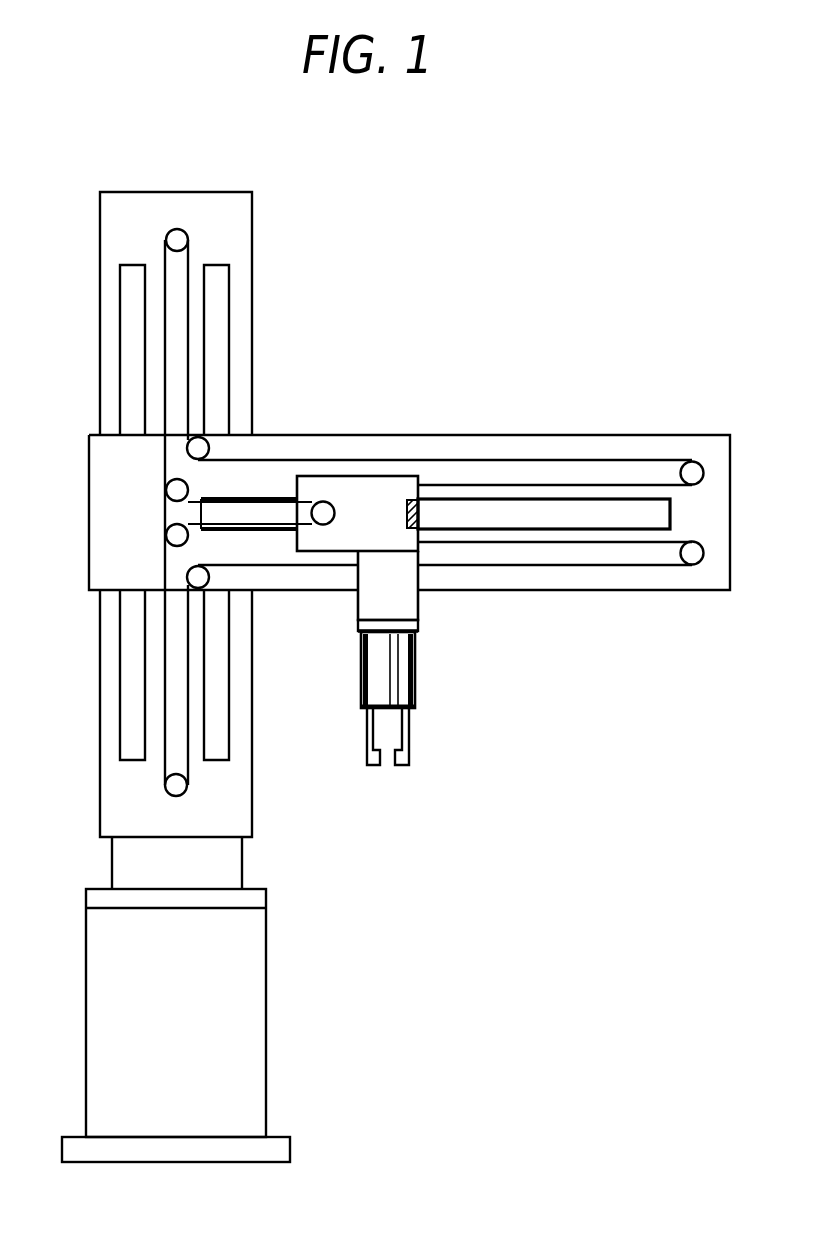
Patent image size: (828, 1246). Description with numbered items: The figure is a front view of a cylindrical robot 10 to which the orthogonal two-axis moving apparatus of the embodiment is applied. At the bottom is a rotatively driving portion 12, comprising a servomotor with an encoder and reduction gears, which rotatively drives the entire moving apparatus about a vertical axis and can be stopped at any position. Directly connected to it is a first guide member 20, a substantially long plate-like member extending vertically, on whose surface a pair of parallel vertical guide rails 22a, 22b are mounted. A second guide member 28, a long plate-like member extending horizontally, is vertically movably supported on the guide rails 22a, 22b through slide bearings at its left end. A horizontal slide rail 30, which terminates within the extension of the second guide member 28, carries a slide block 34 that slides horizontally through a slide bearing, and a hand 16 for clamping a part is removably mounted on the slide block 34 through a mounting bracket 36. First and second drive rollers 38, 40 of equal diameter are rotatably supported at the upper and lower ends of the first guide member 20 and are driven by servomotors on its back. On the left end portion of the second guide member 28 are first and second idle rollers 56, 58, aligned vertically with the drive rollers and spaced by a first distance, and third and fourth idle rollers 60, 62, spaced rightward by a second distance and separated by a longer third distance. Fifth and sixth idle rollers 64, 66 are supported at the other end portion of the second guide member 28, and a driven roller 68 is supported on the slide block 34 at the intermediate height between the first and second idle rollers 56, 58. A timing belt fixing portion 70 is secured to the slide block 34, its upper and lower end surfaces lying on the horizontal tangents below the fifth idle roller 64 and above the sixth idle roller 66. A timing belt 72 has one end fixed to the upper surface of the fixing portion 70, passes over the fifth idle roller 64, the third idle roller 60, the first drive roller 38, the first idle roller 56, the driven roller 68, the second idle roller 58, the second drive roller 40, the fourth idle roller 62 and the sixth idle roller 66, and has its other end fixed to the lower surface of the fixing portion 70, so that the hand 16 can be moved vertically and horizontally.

The cylindrical robot 10 is at (528, 270).
The rotatively driving portion 12 is at (256, 979).
The hand 16 is at (78, 286).
The first guide member 20 is at (266, 274).
The guide rail 22a is at (125, 360).
The guide rail 22b is at (223, 340).
The second guide member 28 is at (500, 427).
The slide rail 30 is at (630, 500).
The slide block 34 is at (387, 482).
The mounting bracket 36 is at (407, 603).
The first drive roller 38 is at (178, 240).
The second drive roller 40 is at (168, 790).
The first idle roller 56 is at (168, 497).
The second idle roller 58 is at (168, 540).
The third idle roller 60 is at (203, 447).
The fourth idle roller 62 is at (207, 578).
The fifth idle roller 64 is at (688, 466).
The sixth idle roller 66 is at (693, 558).
The driven roller 68 is at (318, 505).
The timing belt fixing portion 70 is at (414, 498).
The timing belt 72 is at (590, 567).